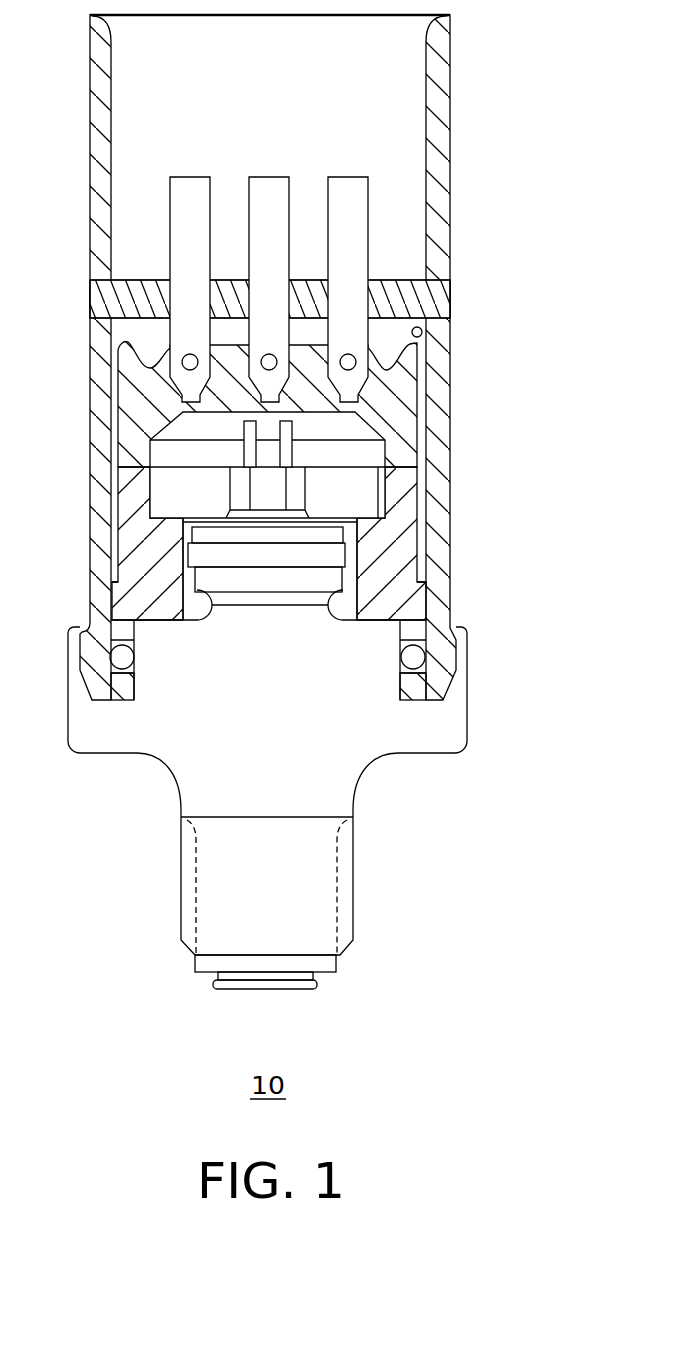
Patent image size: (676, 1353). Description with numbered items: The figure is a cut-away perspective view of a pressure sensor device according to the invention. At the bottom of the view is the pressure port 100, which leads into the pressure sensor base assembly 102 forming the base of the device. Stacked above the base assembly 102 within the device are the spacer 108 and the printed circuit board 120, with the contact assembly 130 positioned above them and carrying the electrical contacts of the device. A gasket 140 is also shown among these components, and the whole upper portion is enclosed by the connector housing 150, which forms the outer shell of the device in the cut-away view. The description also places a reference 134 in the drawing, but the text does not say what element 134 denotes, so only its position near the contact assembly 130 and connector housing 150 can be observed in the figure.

The connector housing 150 is at (452, 135).
The terminal plate 134 is at (368, 231).
The gasket 140 is at (422, 331).
The contact assembly 130 is at (372, 427).
The printed circuit board 120 is at (368, 455).
The spacer 108 is at (368, 506).
The pressure sensor base assembly 102 is at (453, 734).
The pressure port 100 is at (337, 965).